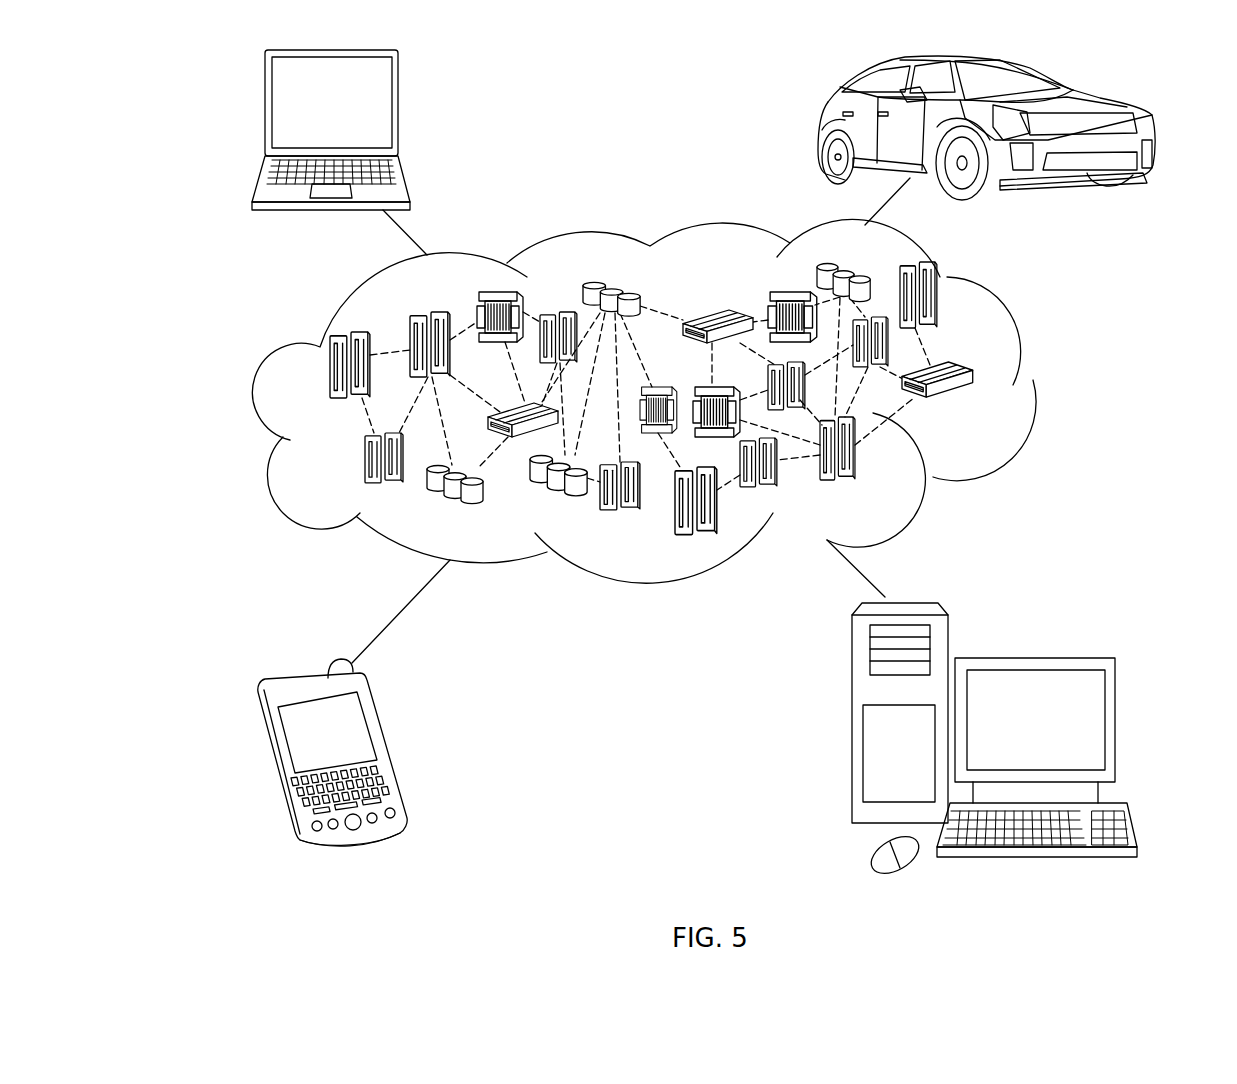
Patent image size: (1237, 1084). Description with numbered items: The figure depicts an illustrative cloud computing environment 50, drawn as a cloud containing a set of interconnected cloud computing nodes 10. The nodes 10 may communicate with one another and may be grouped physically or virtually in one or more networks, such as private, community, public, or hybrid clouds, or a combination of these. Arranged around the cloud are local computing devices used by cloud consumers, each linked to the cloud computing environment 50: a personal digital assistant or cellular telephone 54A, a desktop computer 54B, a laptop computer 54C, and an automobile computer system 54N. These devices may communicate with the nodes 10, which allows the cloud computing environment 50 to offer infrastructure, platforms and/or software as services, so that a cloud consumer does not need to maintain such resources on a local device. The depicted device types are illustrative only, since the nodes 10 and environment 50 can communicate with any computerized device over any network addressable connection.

The cloud computing nodes 10 is at (978, 408).
The cloud computing environment 50 is at (1033, 377).
The personal digital assistant (PDA) or cellular telephone 54A is at (390, 747).
The desktop computer 54B is at (1032, 658).
The laptop computer 54C is at (398, 110).
The automobile computer system 54N is at (822, 127).